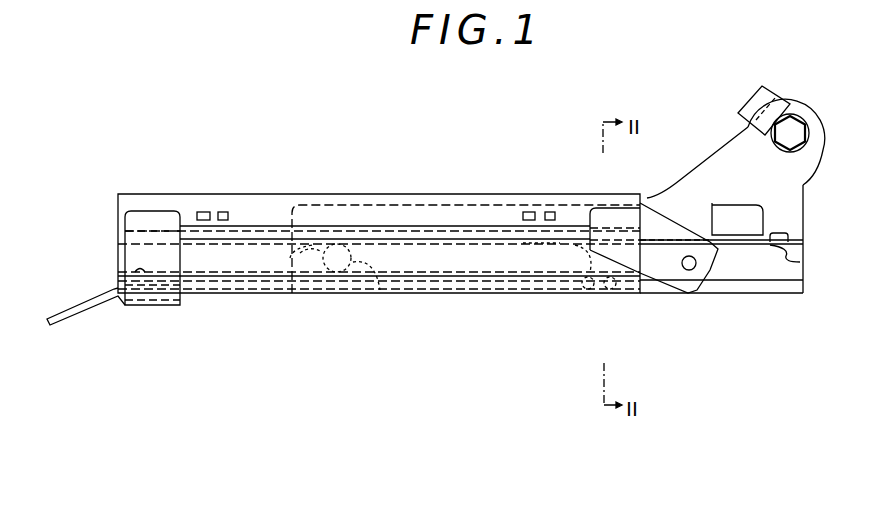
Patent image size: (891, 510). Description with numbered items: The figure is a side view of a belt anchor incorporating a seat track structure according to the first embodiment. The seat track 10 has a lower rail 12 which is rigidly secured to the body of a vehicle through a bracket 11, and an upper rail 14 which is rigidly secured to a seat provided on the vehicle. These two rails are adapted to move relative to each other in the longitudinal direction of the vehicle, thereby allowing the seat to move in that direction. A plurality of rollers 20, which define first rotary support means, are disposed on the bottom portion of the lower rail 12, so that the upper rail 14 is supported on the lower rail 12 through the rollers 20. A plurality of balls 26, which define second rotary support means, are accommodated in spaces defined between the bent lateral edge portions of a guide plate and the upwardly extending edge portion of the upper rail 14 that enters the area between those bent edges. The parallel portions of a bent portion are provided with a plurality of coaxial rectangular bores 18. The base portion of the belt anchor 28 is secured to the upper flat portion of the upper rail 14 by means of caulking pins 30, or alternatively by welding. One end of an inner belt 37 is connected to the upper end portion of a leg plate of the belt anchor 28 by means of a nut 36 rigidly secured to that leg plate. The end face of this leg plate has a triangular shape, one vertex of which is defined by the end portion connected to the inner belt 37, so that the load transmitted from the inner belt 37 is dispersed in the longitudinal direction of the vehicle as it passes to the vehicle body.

The seat track 10 is at (145, 165).
The bracket 11 is at (100, 308).
The lower rail 12 is at (258, 185).
The upper rail 14 is at (783, 294).
The rectangular bores 18 is at (203, 212).
The rollers 20 is at (380, 290).
The balls 26 is at (308, 290).
The belt anchor 28 is at (803, 170).
The caulking pins 30 is at (290, 258).
The nut 36 is at (812, 134).
The inner belt 37 is at (740, 118).